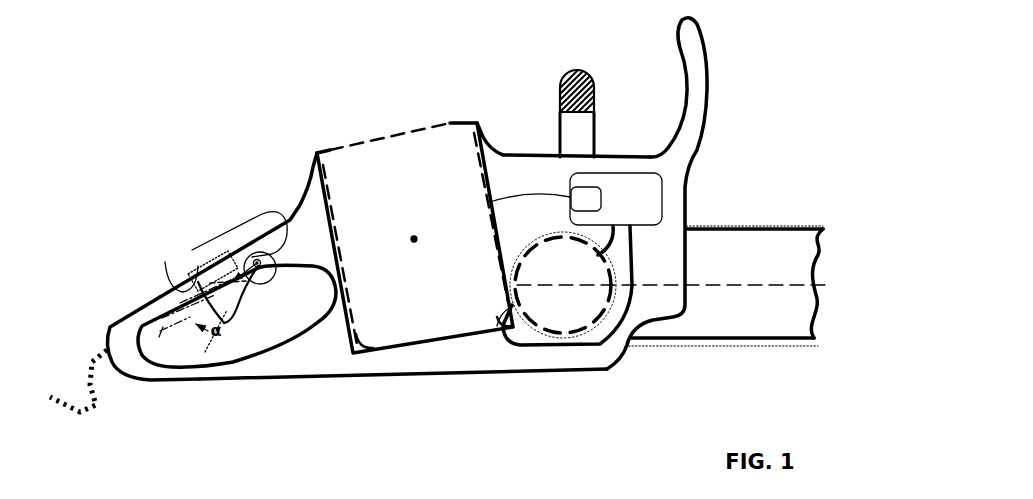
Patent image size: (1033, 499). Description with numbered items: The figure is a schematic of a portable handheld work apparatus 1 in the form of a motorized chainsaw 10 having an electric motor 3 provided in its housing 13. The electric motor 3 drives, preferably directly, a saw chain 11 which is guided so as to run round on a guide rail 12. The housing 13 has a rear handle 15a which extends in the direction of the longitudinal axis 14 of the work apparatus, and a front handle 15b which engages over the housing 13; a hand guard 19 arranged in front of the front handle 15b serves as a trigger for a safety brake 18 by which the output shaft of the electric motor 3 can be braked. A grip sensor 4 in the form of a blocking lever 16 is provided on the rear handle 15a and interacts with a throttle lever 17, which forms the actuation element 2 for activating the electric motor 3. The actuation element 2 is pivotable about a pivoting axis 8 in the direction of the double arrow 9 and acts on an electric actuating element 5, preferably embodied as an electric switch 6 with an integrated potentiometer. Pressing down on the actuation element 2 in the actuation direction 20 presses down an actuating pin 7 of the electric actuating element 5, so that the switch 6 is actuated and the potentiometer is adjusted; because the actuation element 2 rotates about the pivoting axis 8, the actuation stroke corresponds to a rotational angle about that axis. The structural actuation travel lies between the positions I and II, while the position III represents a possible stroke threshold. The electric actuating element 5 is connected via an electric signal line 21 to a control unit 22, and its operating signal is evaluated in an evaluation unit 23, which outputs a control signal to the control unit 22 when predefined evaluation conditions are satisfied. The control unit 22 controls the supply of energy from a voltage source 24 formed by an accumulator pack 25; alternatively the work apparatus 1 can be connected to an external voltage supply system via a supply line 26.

The portable handheld work apparatus 1 is at (233, 149).
The actuation element 2 is at (243, 342).
The electric motor 3 is at (568, 310).
The grip sensor 4 is at (222, 219).
The electric actuating element 5 is at (183, 303).
The electric switch 6 is at (212, 270).
The actuating pin 7 is at (207, 287).
The pivoting axis 8 is at (260, 267).
The double arrow 9 is at (266, 243).
The motorized chainsaw 10 is at (501, 146).
The saw chain 11 is at (748, 228).
The guide rail 12 is at (777, 262).
The housing 13 is at (477, 353).
The longitudinal axis 14 is at (768, 288).
The rear handle 15a is at (153, 370).
The front handle 15b is at (579, 83).
The blocking lever 16 is at (257, 220).
The throttle lever 17 is at (228, 313).
The safety brake 18 is at (596, 323).
The hand guard 19 is at (700, 58).
The actuation direction 20 is at (262, 330).
The electric signal line 21 is at (533, 195).
The control unit 22 is at (633, 190).
The evaluation unit 23 is at (584, 190).
The voltage source 24 is at (414, 238).
The accumulator pack 25 is at (377, 163).
The supply line 26 is at (90, 360).
The position I is at (160, 330).
The position II is at (162, 318).
The position III is at (180, 303).